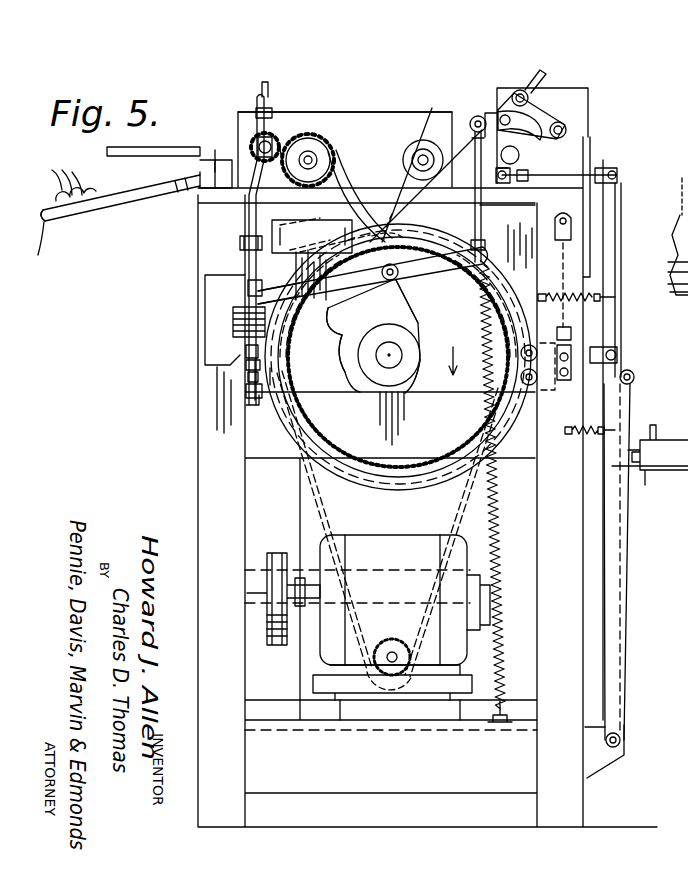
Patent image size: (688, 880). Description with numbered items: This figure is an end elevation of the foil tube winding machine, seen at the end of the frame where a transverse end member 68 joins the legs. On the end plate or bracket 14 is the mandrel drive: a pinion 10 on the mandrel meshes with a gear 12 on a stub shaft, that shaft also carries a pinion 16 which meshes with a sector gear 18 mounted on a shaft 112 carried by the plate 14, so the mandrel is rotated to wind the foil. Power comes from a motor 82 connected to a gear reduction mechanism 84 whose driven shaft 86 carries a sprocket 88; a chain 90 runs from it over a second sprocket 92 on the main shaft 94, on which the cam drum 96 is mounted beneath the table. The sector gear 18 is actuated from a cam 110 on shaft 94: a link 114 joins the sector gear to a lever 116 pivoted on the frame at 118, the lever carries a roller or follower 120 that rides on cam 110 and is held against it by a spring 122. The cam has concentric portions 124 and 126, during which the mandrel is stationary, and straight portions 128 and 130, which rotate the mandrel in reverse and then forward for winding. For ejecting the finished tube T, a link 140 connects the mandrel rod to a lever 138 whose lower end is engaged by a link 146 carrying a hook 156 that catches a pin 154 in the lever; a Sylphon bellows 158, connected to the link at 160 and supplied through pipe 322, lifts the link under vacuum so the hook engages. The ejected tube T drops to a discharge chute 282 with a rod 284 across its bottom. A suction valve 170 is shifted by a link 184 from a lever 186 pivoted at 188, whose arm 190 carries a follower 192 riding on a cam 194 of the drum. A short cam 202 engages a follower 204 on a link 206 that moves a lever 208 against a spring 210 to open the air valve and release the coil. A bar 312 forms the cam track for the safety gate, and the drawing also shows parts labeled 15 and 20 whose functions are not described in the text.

The pinion 10 is at (268, 130).
The gear 12 is at (318, 133).
The plate or bracket 14 is at (358, 112).
The housing 15 is at (678, 228).
The pinion 16 is at (332, 128).
The sector gear 18 is at (348, 165).
The table plate 20 is at (213, 135).
The transverse end member 68 is at (170, 203).
The motor 82 is at (403, 540).
The gear reduction mechanism 84 is at (310, 662).
The driven shaft 86 is at (372, 680).
The sprocket 88 is at (405, 638).
The chain 90 is at (312, 502).
The second sprocket 92 is at (347, 488).
The main shaft 94 is at (375, 372).
The cam drum 96 is at (418, 486).
The cam 110 is at (334, 340).
The shaft 112 is at (420, 139).
The link 114 is at (473, 116).
The lever 116 is at (289, 310).
The pivot 118 is at (245, 295).
The roller or follower 120 is at (408, 280).
The spring 122 is at (500, 503).
The concentric portion 124 is at (340, 300).
The concentric portion 126 is at (406, 388).
The straight portion 128 is at (342, 358).
The straight portion 130 is at (415, 318).
The lever 138 is at (240, 215).
The link 140 is at (262, 110).
The link 146 is at (245, 390).
The pin 154 is at (245, 365).
The hook 156 is at (246, 376).
The Sylphon bellows 158 is at (236, 321).
The connection 160 is at (242, 352).
The valve 170 is at (572, 104).
The link 184 is at (560, 170).
The lever 186 is at (624, 205).
The pivot 188 is at (622, 740).
The arm 190 is at (592, 347).
The follower 192 is at (535, 335).
The cam 194 is at (505, 287).
The short cam 202 is at (393, 214).
The follower 204 is at (533, 388).
The link 206 is at (568, 428).
The lever 208 is at (632, 394).
The spring 210 is at (640, 448).
The discharge chute 282 is at (62, 215).
The rod 284 is at (46, 228).
The bar 312 is at (204, 72).
The pipe 322 is at (242, 258).
The tube T is at (74, 179).